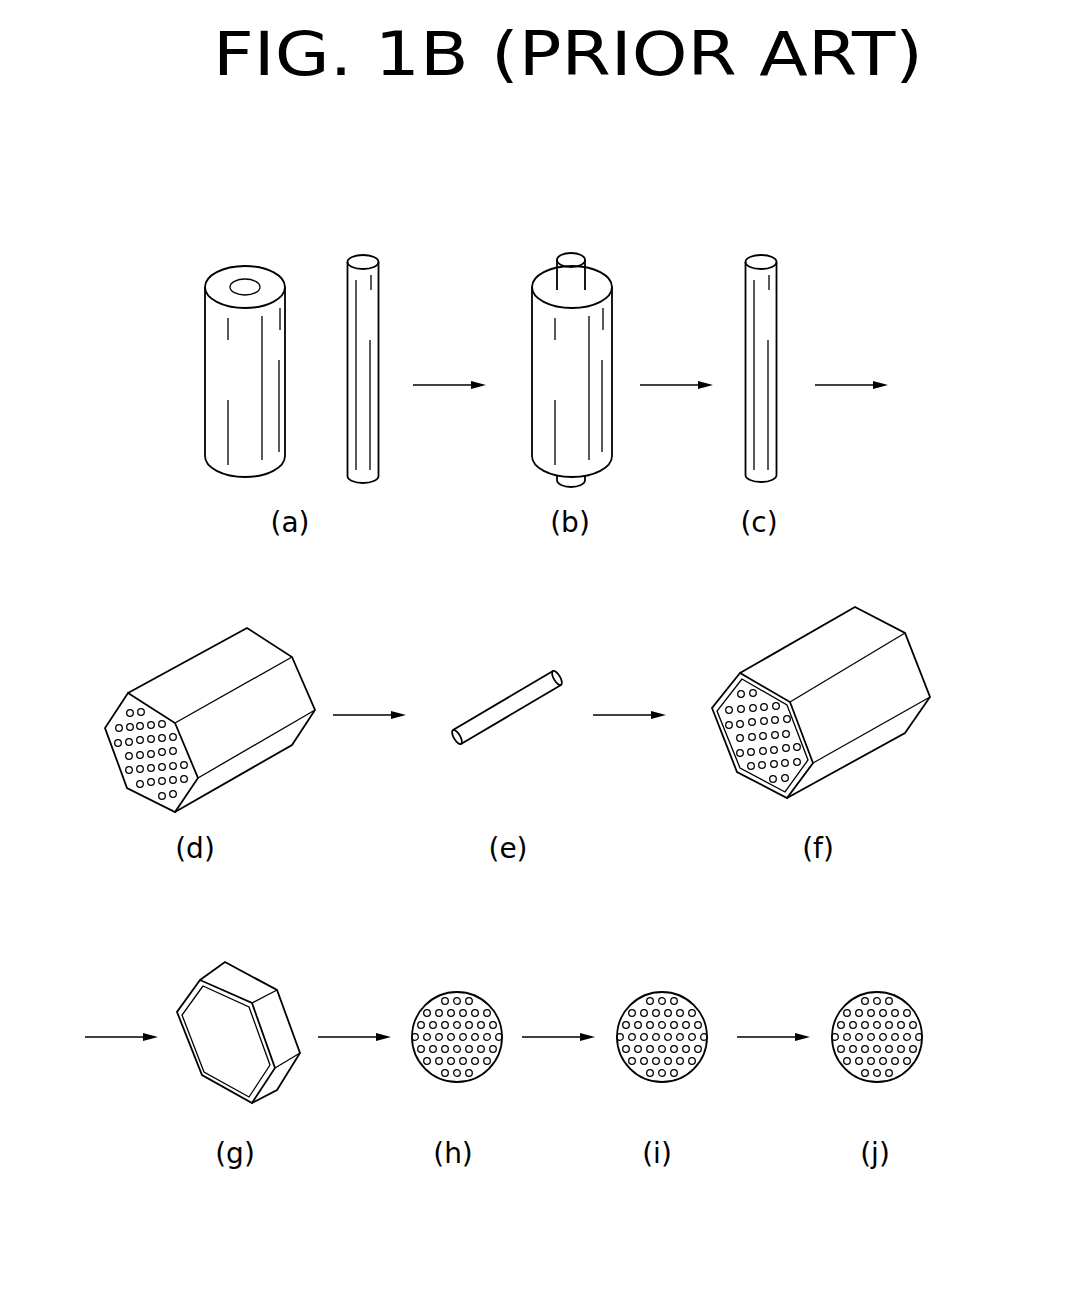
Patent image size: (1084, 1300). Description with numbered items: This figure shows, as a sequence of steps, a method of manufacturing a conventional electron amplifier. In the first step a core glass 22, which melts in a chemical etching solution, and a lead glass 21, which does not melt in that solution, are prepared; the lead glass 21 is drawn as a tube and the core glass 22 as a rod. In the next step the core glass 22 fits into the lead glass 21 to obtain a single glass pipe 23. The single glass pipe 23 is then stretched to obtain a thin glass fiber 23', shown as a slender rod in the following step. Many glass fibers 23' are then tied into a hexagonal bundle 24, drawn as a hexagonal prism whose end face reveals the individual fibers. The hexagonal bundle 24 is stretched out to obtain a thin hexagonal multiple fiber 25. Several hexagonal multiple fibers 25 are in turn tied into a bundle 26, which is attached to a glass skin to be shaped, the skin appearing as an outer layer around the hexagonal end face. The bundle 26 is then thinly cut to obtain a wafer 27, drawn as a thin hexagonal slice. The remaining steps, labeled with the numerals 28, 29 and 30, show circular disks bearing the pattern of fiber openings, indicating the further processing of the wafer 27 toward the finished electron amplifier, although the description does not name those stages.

The lead glass 21 is at (208, 367).
The core glass 22 is at (378, 312).
The single glass pipe 23 is at (622, 332).
The thin glass fiber 23' is at (807, 368).
The hexagonal bundle 24 is at (197, 669).
The hexagonal multiple fiber 25 is at (510, 700).
The bundle 26 is at (780, 660).
The wafer 27 is at (251, 988).
The circular disk 28 is at (432, 997).
The polished disk 29 is at (636, 997).
The finished microchannel plate 30 is at (852, 997).